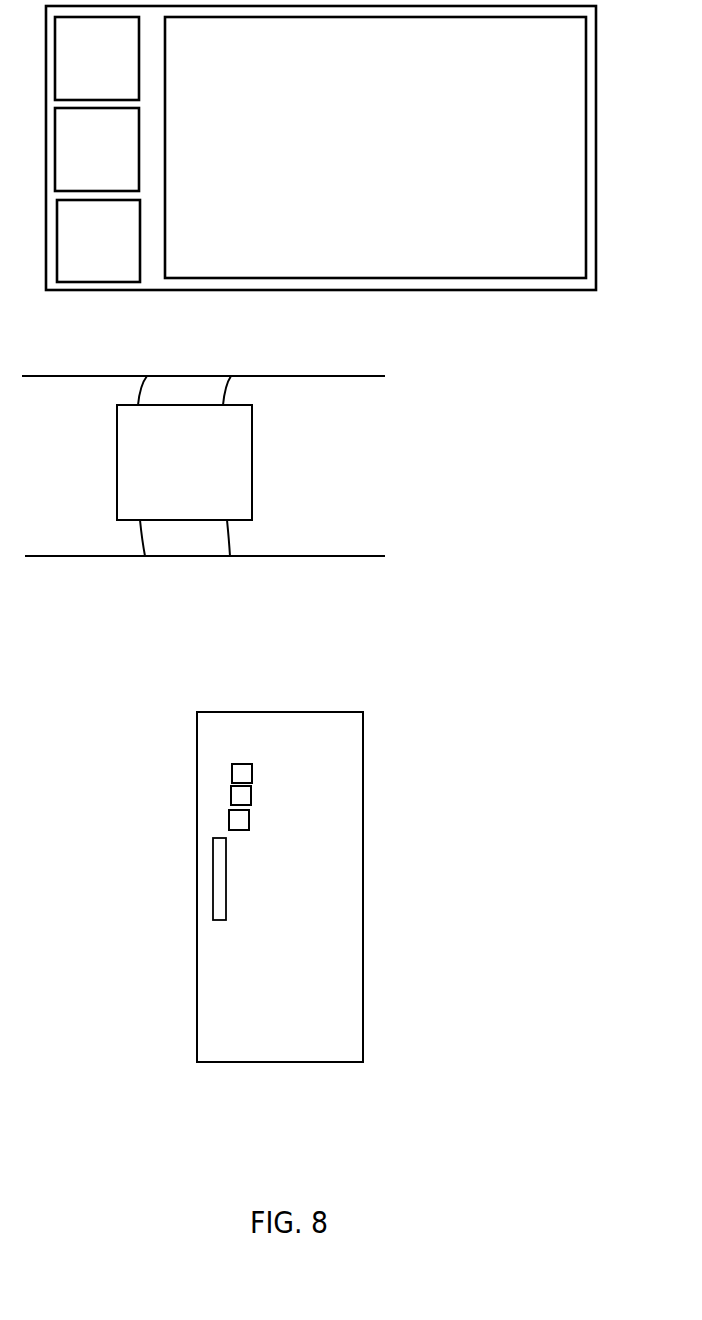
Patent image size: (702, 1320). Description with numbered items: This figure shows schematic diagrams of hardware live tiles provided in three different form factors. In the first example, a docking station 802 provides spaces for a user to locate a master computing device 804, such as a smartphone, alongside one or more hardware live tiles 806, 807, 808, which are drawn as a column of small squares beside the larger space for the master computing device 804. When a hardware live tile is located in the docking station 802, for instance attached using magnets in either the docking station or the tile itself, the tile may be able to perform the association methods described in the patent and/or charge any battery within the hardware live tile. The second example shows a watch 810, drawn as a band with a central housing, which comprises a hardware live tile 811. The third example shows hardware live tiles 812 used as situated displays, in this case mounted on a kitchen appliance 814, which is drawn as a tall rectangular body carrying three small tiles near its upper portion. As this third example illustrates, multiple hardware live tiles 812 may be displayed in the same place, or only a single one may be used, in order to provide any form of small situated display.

The docking station 802 is at (596, 43).
The master computing device 804 is at (375, 147).
The hardware live tile 806 is at (97, 58).
The hardware live tile 807 is at (97, 149).
The hardware live tile 808 is at (98, 241).
The watch 810 is at (218, 553).
The hardware live tile 811 is at (240, 418).
The hardware live tiles 812 is at (238, 775).
The kitchen appliance 814 is at (363, 748).